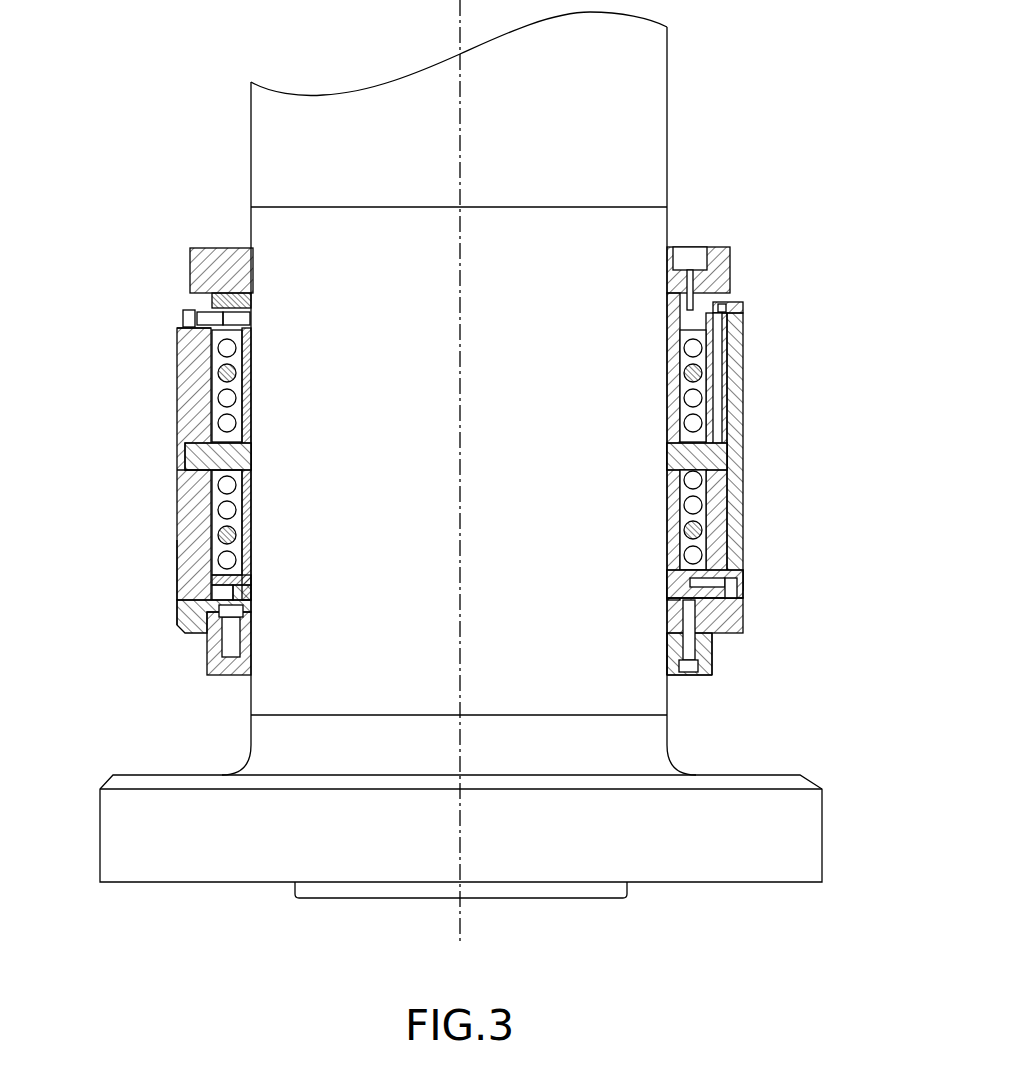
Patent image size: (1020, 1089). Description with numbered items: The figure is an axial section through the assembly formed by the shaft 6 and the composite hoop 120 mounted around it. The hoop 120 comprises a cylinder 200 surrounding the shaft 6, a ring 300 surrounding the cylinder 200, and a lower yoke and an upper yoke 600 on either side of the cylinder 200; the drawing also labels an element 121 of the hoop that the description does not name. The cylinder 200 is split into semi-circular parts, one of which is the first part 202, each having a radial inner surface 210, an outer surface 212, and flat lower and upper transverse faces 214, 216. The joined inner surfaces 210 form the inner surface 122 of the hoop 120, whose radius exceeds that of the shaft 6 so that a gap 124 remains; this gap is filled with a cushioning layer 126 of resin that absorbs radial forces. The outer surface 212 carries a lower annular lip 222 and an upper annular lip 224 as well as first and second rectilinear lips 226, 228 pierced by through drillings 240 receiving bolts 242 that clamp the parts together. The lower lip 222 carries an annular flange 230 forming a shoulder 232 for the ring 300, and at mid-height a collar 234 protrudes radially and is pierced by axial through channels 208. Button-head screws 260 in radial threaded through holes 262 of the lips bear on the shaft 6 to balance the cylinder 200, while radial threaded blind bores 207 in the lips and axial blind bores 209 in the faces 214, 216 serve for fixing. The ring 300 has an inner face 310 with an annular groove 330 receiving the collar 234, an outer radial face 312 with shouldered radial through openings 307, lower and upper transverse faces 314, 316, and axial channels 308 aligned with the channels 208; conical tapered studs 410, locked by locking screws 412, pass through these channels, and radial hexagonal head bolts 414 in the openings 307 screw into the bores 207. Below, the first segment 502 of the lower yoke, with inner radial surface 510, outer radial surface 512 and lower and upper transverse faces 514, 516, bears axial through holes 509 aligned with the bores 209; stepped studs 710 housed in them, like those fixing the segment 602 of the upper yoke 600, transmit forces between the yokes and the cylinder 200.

The shaft 6 is at (243, 86).
The hoop 120 is at (153, 246).
The housing 121 is at (177, 399).
The inner surface 122 is at (175, 452).
The gap 124 is at (258, 383).
The cushioning layer 126 is at (227, 423).
The cylinder 200 is at (263, 532).
The first part 202 is at (227, 560).
The radial threaded blind bores 207 is at (668, 593).
The axial through channels 208 is at (668, 454).
The axial blind bores 209 is at (668, 322).
The radial inner surface 210 is at (250, 366).
The outer surface 212 is at (258, 401).
The lower transverse face 214 is at (254, 641).
The upper transverse face 216 is at (255, 281).
The lower annular lip 222 is at (250, 589).
The upper annular lip 224 is at (216, 299).
The first rectilinear lip 226 is at (255, 491).
The second rectilinear lip 228 is at (668, 521).
The annular flange 230 is at (222, 641).
The shoulder 232 is at (182, 631).
The collar 234 is at (258, 461).
The through drillings 240 is at (257, 531).
The bolts 242 is at (252, 566).
The button-head screws 260 is at (250, 597).
The radial threaded through holes 262 is at (180, 614).
The ring 300 is at (176, 543).
The radial through openings 307 is at (737, 563).
The axial channels 308 is at (727, 383).
The inner face 310 is at (180, 599).
The outer radial face 312 is at (178, 559).
The lower transverse face 314 is at (206, 630).
The upper transverse face 316 is at (184, 308).
The annular groove 330 is at (180, 479).
The conical tapered studs 410 is at (736, 413).
The locking screws 412 is at (736, 306).
The radial hexagonal head bolts 414 is at (740, 591).
The first segment 502 is at (660, 661).
The axial through holes 509 is at (700, 671).
The inner radial surface 510 is at (668, 649).
The outer radial surface 512 is at (714, 650).
The lower transverse face 514 is at (675, 678).
The upper transverse face 516 is at (748, 626).
The upper yoke 600 is at (690, 290).
The segment 602 is at (660, 271).
The stepped studs 710 is at (705, 678).